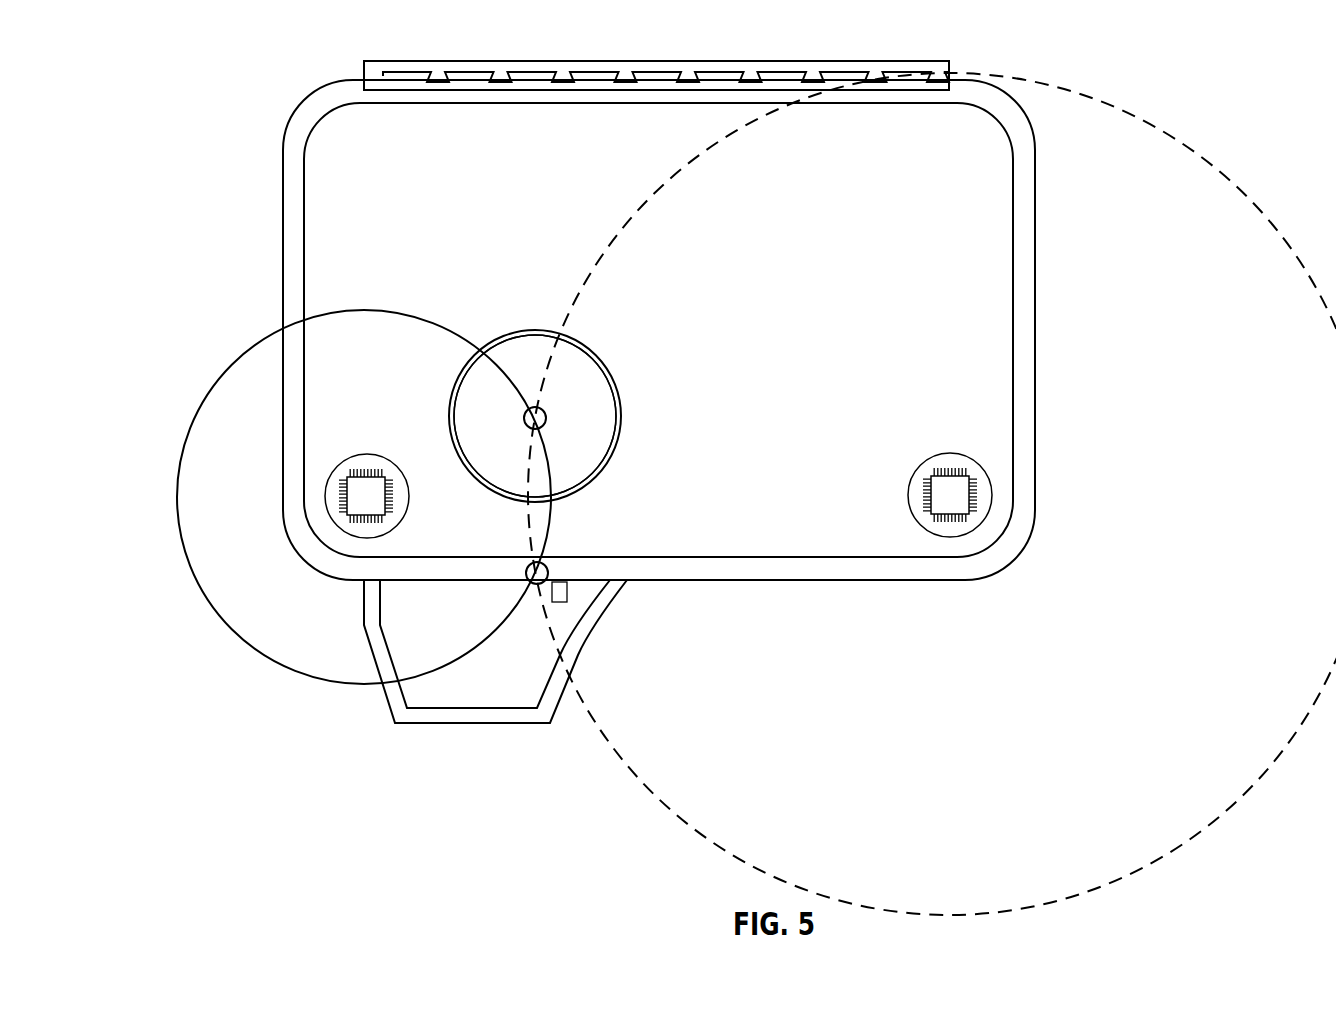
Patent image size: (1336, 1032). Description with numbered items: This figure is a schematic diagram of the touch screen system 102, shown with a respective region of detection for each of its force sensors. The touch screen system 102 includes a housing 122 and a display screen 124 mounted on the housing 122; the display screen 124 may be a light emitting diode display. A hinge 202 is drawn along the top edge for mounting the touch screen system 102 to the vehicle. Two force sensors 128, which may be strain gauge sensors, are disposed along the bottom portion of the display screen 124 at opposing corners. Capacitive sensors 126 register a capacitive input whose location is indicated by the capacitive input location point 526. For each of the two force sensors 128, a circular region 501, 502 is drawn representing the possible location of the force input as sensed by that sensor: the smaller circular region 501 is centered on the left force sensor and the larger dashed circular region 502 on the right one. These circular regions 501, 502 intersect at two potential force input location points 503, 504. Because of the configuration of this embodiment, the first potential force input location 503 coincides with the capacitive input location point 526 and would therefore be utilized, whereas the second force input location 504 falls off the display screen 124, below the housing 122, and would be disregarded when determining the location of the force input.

The touch screen system 102 is at (1088, 57).
The housing 122 is at (1035, 330).
The display screen 124 is at (983, 252).
The capacitive sensors 126 is at (573, 355).
The capacitive input location point 526 is at (535, 416).
The force sensors 128 is at (358, 496).
The hinge 202 is at (568, 72).
The circular region 501 is at (254, 364).
The circular region 502 is at (1150, 152).
The first potential force input location 503 is at (548, 418).
The second force input location 504 is at (548, 572).